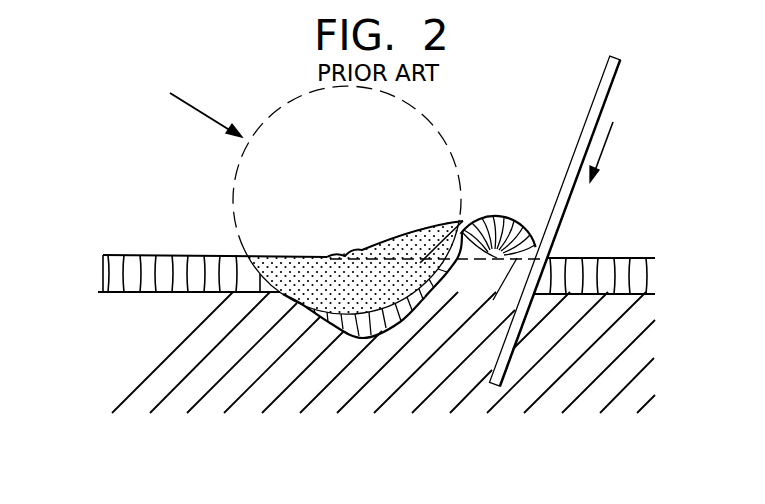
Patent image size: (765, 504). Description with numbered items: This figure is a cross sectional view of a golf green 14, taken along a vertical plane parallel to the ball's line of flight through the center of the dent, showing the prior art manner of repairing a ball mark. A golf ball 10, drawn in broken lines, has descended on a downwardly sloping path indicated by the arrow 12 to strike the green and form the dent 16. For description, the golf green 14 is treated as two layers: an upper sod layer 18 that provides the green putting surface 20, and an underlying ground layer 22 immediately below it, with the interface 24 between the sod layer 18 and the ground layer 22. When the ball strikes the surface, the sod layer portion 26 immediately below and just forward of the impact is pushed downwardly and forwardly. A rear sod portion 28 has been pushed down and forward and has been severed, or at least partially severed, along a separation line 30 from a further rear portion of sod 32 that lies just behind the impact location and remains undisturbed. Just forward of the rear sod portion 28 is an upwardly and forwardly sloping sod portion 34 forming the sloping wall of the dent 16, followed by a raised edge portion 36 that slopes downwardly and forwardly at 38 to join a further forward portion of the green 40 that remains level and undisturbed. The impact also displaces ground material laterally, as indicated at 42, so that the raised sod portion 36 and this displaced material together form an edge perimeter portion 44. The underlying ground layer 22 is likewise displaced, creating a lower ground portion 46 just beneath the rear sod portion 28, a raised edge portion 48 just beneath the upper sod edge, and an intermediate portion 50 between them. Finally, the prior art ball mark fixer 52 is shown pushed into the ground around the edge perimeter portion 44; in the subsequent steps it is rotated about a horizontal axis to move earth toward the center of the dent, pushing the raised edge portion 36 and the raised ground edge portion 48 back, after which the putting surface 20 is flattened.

The golf ball 10 is at (233, 182).
The arrow 12 is at (192, 112).
The golf green 14 is at (590, 264).
The dent 16 is at (345, 310).
The upper sod layer 18 is at (288, 267).
The green putting surface 20 is at (163, 255).
The underlying ground layer 22 is at (120, 307).
The interface 24 is at (163, 293).
The sod layer portion 26 is at (402, 317).
The rear sod portion 28 is at (335, 340).
The separation line 30 is at (278, 295).
The further rear portion of sod 32 is at (207, 293).
The upwardly and forwardly sloping sod portion 34 is at (457, 330).
The raised edge portion 36 is at (483, 217).
The downwardly and forwardly sloping portion 38 is at (523, 225).
The further forward portion of the green 40 is at (578, 258).
The laterally displaced ground material 42 is at (402, 235).
The edge perimeter portion 44 is at (466, 222).
The compressed layer 46 is at (372, 343).
The raised edge portion of ground layer 48 is at (503, 216).
The intermediate portion 50 is at (437, 327).
The ball mark fixer 52 is at (602, 84).